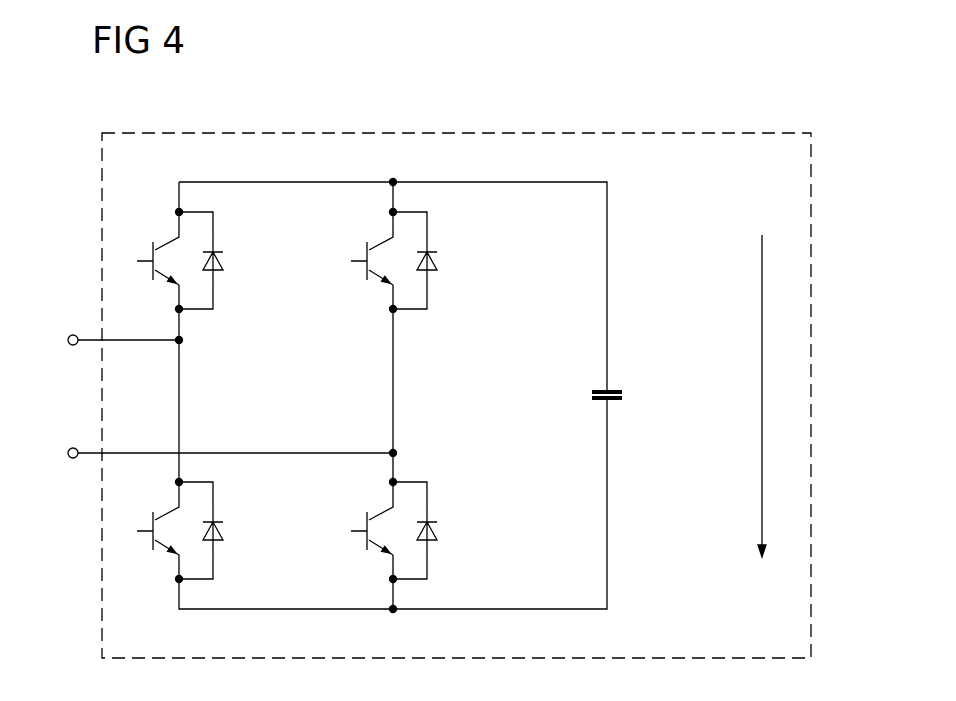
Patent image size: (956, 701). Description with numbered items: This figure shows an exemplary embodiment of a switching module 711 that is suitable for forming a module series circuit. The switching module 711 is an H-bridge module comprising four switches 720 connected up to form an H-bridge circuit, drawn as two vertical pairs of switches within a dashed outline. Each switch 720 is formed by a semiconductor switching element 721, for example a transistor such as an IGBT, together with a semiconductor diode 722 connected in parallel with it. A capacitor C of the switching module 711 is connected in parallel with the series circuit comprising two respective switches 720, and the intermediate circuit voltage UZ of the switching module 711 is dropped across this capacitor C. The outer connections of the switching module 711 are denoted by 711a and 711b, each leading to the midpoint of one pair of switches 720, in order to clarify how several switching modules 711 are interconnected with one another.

The switching module 711 is at (455, 133).
The outer connection 711a is at (73, 334).
The outer connection 711b is at (73, 459).
The switch 720 is at (321, 396).
The semiconductor switching element 721 is at (348, 260).
The semiconductor diode 722 is at (449, 260).
The capacitor C is at (624, 395).